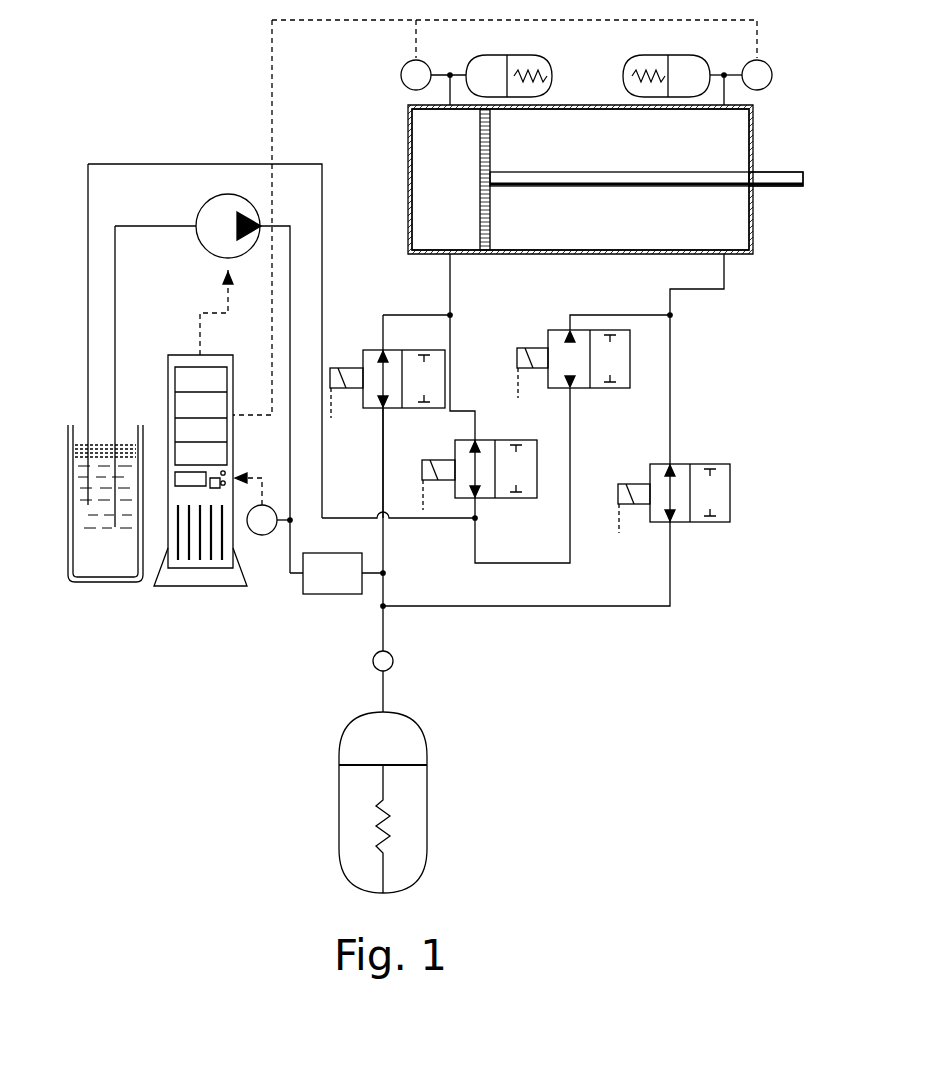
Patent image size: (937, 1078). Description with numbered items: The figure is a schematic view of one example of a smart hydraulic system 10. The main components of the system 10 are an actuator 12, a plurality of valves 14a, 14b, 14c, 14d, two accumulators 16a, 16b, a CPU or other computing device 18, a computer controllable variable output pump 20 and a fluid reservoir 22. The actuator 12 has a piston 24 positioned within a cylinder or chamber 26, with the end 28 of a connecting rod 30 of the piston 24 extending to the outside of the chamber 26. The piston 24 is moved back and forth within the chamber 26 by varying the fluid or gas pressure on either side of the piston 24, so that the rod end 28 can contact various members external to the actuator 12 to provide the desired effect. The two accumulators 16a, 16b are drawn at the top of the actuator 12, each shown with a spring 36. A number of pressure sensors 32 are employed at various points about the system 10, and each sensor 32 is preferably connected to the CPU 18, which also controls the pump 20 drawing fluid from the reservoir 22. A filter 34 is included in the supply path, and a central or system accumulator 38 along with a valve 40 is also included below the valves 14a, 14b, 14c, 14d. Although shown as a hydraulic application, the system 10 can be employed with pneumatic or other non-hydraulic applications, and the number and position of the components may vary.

The smart hydraulic system 10 is at (205, 122).
The actuator 12 is at (725, 138).
The valve 14a is at (720, 464).
The valve 14b is at (598, 388).
The valve 14c is at (508, 498).
The valve 14d is at (418, 408).
The accumulator 16a is at (632, 60).
The accumulator 16b is at (485, 60).
The CPU 18 is at (172, 585).
The computer controllable variable output pump 20 is at (212, 202).
The fluid reservoir 22 is at (75, 526).
The piston 24 is at (482, 195).
The chamber 26 is at (737, 216).
The rod end 28 is at (795, 178).
The connecting rod 30 is at (638, 186).
The pressure sensor 32 is at (401, 75).
The filter 34 is at (332, 594).
The spring 36 is at (512, 58).
The central accumulator 38 is at (413, 806).
The valve 40 is at (390, 661).